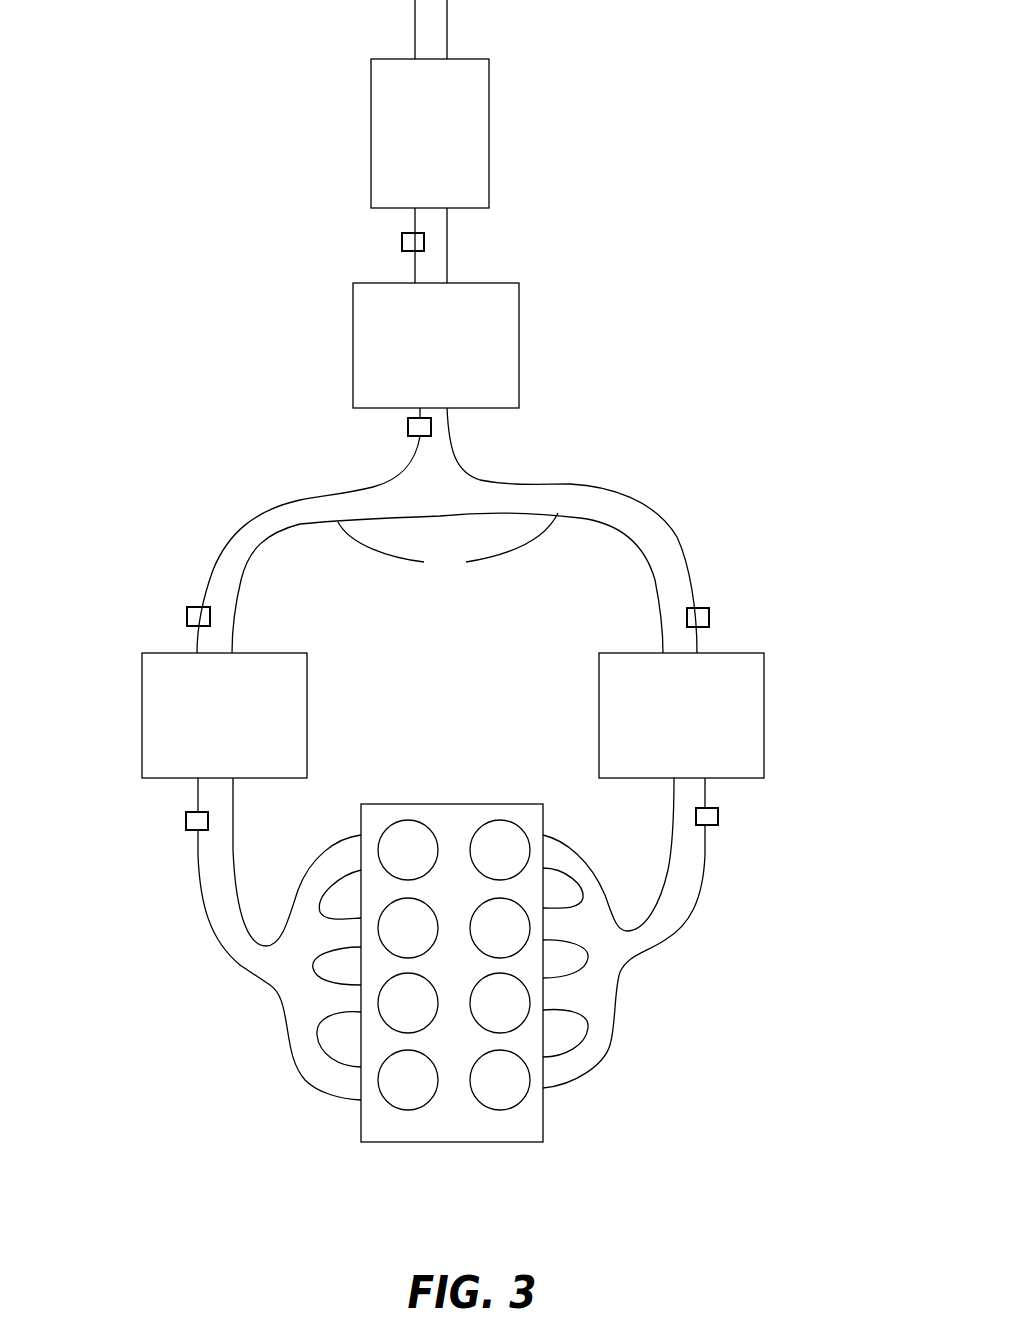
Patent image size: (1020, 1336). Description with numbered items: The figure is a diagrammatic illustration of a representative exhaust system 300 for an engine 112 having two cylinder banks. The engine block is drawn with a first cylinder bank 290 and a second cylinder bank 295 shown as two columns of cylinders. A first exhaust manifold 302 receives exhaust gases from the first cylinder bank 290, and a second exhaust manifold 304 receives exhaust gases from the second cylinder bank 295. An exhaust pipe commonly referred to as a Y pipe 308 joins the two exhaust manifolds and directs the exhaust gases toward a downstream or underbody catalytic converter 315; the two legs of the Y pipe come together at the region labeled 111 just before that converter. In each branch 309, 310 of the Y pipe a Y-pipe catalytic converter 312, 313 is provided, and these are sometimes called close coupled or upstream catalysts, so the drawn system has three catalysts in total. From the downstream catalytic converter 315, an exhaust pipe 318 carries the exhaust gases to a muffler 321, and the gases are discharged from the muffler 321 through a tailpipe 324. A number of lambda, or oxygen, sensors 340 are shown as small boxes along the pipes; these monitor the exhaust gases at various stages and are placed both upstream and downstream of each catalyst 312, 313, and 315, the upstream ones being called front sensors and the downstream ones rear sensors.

The exhaust system 300 is at (146, 57).
The tailpipe 324 is at (447, 20).
The muffler 321 is at (490, 173).
The exhaust pipe 318 is at (448, 238).
The downstream catalytic converter 315 is at (436, 345).
The junction / merged exhaust passage 111 is at (438, 493).
The first branch of the Y-pipe 309 is at (225, 545).
The second branch of the Y-pipe 310 is at (680, 535).
The Y pipe 308 is at (448, 544).
The Y-pipe catalytic converter 312 is at (224, 715).
The Y-pipe catalytic converter 313 is at (681, 715).
The first exhaust manifold 302 is at (300, 1075).
The second exhaust manifold 304 is at (585, 1068).
The engine 112 is at (358, 1123).
The first cylinder bank 290 is at (380, 1093).
The second cylinder bank 295 is at (537, 1097).
The lambda (oxygen) sensors 340 is at (402, 242).